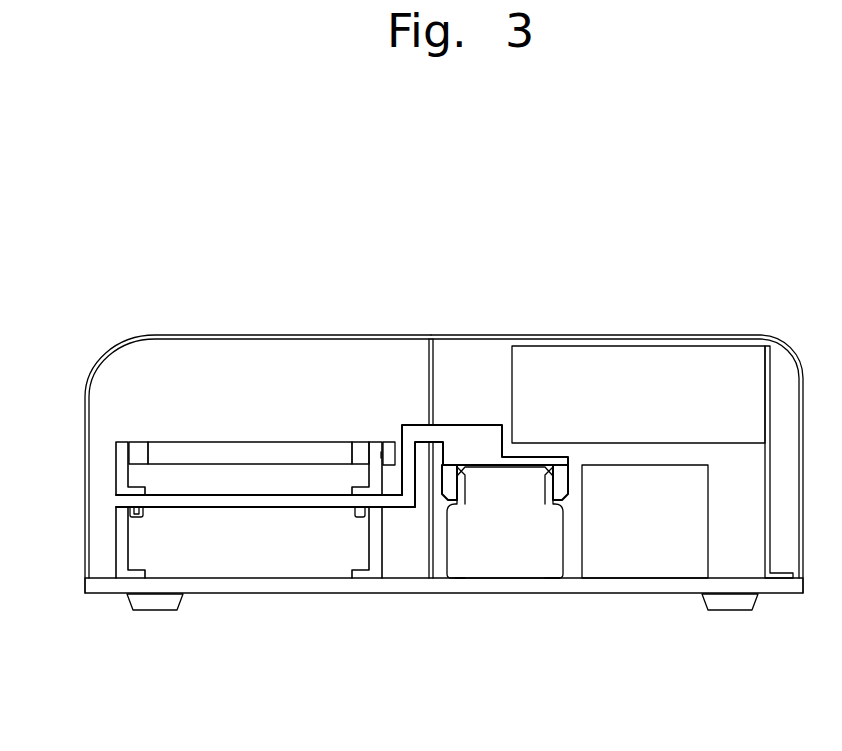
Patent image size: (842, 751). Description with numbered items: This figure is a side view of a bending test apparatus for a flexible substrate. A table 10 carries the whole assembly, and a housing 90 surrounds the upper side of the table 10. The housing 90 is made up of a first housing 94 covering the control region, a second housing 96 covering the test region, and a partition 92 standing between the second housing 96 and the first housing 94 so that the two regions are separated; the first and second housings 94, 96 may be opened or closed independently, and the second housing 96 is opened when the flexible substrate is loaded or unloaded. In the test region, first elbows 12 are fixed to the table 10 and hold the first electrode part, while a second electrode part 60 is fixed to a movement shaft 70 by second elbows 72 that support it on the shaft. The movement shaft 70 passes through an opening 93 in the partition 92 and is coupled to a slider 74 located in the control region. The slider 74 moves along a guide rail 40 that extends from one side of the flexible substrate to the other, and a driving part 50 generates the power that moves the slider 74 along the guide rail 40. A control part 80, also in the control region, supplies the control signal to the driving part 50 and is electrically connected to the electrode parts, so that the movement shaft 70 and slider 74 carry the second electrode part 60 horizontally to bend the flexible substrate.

The table 10 is at (427, 588).
The first elbows 12 is at (122, 547).
The guide rail 40 is at (507, 563).
The driving part 50 is at (642, 563).
The second electrode part 60 is at (264, 437).
The movement shaft 70 is at (122, 502).
The second elbows 72 is at (122, 468).
The slider 74 is at (482, 457).
The control part 80 is at (670, 360).
The housing 90 is at (522, 270).
The partition 92 is at (430, 383).
The opening 93 is at (420, 424).
The first housing 94 is at (493, 335).
The second housing 96 is at (273, 335).